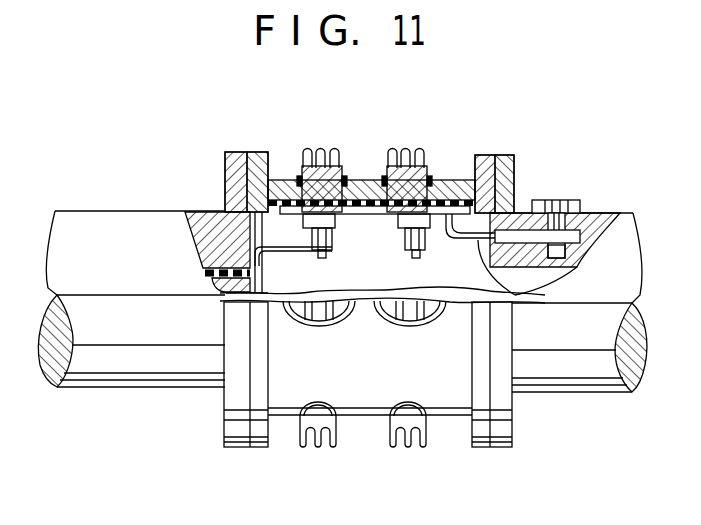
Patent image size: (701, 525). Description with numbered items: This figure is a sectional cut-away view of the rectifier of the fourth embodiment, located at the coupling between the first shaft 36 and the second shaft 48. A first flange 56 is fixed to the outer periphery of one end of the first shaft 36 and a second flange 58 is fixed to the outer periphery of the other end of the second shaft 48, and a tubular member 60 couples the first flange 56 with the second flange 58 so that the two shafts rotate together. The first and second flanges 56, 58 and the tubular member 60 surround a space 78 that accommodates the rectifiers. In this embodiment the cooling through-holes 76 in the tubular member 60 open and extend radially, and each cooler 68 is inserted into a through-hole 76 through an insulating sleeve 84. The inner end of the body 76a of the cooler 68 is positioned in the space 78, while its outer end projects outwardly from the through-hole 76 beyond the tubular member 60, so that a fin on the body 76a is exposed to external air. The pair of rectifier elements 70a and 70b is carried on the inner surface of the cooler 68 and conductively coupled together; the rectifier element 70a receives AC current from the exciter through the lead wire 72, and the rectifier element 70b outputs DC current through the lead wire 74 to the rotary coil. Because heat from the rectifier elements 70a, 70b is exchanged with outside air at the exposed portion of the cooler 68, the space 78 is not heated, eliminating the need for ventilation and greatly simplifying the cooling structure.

The first shaft 36 is at (137, 388).
The second shaft 48 is at (560, 393).
The first flange 56 is at (238, 151).
The second flange 58 is at (506, 153).
The tubular member 60 is at (365, 180).
The cooler 68 is at (321, 164).
The insulating sleeve 84 is at (386, 182).
The cooling through-hole 76 is at (301, 181).
The body of the cooler 76a is at (340, 156).
The rectifier element 70a is at (431, 250).
The rectifier element 70b is at (334, 250).
The lead wire 74 is at (294, 248).
The lead wire 72 is at (512, 296).
The space 78 is at (362, 304).